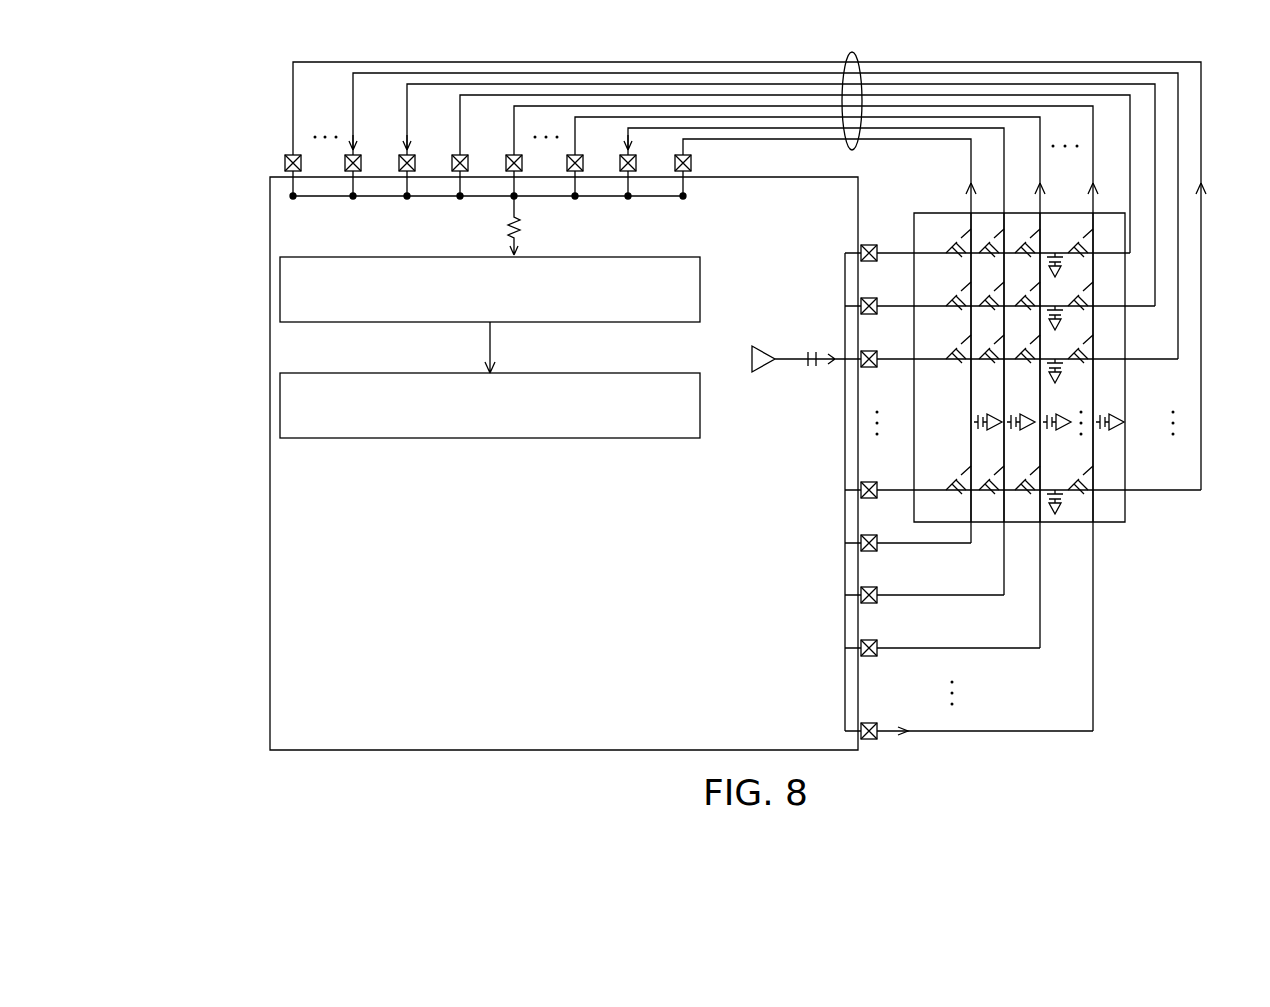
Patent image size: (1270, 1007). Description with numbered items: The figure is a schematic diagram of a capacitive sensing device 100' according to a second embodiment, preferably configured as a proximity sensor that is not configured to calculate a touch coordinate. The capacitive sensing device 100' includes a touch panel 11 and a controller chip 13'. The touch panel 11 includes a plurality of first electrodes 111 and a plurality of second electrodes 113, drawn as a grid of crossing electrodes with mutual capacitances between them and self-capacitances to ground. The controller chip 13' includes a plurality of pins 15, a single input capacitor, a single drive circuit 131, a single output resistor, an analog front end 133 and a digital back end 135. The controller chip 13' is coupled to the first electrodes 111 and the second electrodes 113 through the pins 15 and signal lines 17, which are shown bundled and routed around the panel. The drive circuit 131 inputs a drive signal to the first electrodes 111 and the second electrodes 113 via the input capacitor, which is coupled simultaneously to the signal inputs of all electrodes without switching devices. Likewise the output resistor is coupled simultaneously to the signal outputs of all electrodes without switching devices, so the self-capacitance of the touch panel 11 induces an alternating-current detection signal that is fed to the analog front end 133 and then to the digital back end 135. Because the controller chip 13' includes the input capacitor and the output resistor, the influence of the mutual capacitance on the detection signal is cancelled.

The capacitive sensing device 100' is at (707, 392).
The pins 15 is at (283, 163).
The controller chip 13' is at (530, 463).
The analog front end 133 is at (280, 296).
The digital back end 135 is at (280, 405).
The drive circuit 131 is at (777, 362).
The signal lines 17 is at (840, 50).
The touch panel 11 is at (1108, 525).
The second electrodes 113 is at (1097, 505).
The first electrodes 111 is at (985, 495).